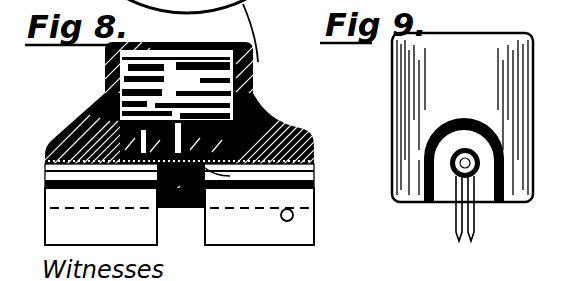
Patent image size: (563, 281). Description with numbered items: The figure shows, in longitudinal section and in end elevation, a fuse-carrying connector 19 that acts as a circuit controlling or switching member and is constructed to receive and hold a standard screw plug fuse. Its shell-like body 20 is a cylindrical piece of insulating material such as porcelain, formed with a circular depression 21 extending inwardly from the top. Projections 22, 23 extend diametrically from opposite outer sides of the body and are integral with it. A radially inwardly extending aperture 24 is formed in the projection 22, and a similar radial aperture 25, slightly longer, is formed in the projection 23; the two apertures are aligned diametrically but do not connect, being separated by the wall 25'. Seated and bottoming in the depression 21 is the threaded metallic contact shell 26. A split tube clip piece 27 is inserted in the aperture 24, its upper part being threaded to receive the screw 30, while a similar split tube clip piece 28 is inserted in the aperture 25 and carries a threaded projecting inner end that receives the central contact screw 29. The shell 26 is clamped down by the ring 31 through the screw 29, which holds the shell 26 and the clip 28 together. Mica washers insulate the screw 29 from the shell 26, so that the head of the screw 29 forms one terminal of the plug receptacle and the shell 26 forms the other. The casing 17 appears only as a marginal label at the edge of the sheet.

In FIG. 9, the casing 17 is at (474, 101).
In FIG. 8, the fuse-carrying connector 19 is at (187, 13).
In FIG. 8, the shell-like body 20 is at (261, 44).
In FIG. 8, the circular depression 21 is at (203, 43).
In FIG. 8, the projection 22 is at (50, 136).
In FIG. 8, the projection 23 is at (302, 128).
In FIG. 8, the aperture 24 is at (68, 170).
In FIG. 9, the aperture 24 is at (455, 200).
In FIG. 8, the aperture 25 is at (202, 172).
In FIG. 8, the wall 25' is at (181, 222).
In FIG. 8, the threaded metallic contact shell 26 is at (176, 88).
In FIG. 8, the split tube clip piece 27 is at (57, 219).
In FIG. 8, the split tube clip piece 28 is at (305, 190).
In FIG. 8, the central contact screw 29 is at (210, 192).
In FIG. 8, the screw 30 is at (129, 172).
In FIG. 8, the ring 31 is at (222, 184).